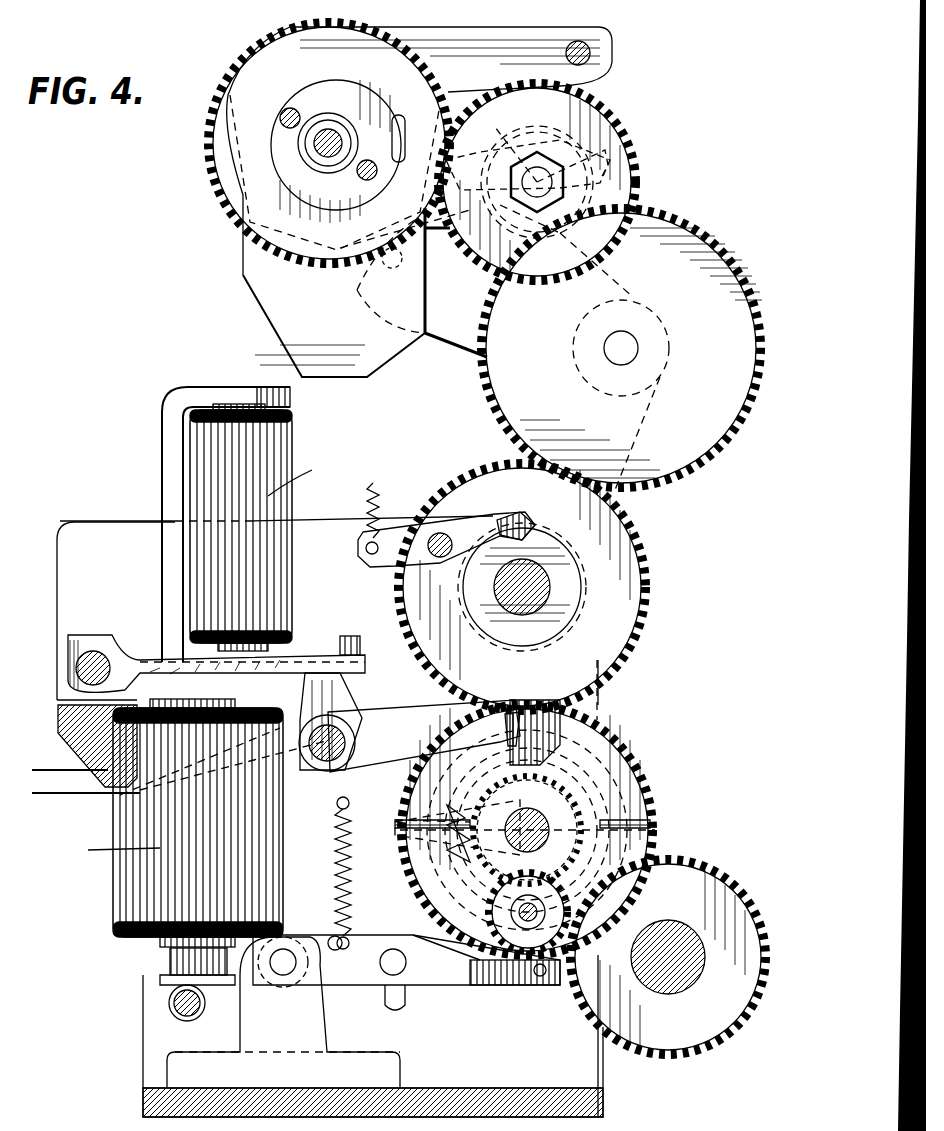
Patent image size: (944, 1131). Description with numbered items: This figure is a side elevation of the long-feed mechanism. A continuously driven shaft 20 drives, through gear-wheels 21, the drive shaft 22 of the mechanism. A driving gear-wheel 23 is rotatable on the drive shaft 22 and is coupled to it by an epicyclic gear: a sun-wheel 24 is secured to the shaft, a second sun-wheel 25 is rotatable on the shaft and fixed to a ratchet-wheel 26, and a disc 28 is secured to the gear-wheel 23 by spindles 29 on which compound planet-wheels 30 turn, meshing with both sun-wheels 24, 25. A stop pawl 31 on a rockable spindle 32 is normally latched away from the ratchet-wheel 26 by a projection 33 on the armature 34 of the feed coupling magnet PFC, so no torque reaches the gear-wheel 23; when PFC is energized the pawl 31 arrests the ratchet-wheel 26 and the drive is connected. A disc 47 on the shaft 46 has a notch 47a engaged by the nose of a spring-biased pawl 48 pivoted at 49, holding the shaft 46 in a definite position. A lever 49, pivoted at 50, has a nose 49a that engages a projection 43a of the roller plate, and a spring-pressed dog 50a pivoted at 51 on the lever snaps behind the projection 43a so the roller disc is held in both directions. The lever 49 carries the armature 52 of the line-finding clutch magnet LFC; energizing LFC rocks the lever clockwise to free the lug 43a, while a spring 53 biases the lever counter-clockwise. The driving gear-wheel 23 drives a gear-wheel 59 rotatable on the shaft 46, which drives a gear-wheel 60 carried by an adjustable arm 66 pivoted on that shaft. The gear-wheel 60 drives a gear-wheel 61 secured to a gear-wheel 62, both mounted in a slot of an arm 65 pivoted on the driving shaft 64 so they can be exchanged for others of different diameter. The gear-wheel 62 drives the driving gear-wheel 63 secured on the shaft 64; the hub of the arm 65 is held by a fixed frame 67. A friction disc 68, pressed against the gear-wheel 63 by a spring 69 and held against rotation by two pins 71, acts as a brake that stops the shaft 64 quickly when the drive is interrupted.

The shaft 20 is at (680, 940).
The gear-wheels 21 is at (680, 882).
The drive shaft 22 is at (545, 820).
The driving gear-wheel 23 is at (610, 870).
The sun-wheel 24 is at (440, 850).
The sun-wheel 25 is at (483, 845).
The ratchet-wheel 26 is at (572, 780).
The disc 28 is at (600, 760).
The spindles 29 is at (545, 900).
The compound planet-wheels 30 is at (505, 723).
The stop pawl 31 is at (378, 724).
The rockable spindle 32 is at (320, 770).
The projection 33 is at (335, 672).
The armature 34 is at (305, 652).
The projection 43a is at (520, 960).
The shaft 46 is at (535, 585).
The disc 47 is at (483, 605).
The notch 47a is at (535, 530).
The spring-biased pawl 48 is at (455, 530).
The lever 49 is at (432, 536).
The nose 49a is at (545, 985).
The pivot 50 is at (283, 975).
The spring-pressed dog 50a is at (475, 955).
The pivot 51 is at (383, 950).
The armature 52 is at (170, 960).
The spring 53 is at (335, 850).
The gear-wheel 59 is at (630, 610).
The gear-wheel 60 is at (665, 243).
The gear-wheel 61 is at (570, 130).
The gear-wheel 62 is at (608, 133).
The driving gear-wheel 63 is at (210, 164).
The driving shaft 64 is at (335, 135).
The arm 65 is at (514, 84).
The arm 66 is at (453, 322).
The fixed frame 67 is at (272, 296).
The friction disc 68 is at (318, 98).
The spring 69 is at (305, 160).
The pins 71 is at (282, 113).
The feed coupling magnet PFC is at (255, 524).
The line-finding clutch magnet LFC is at (164, 823).